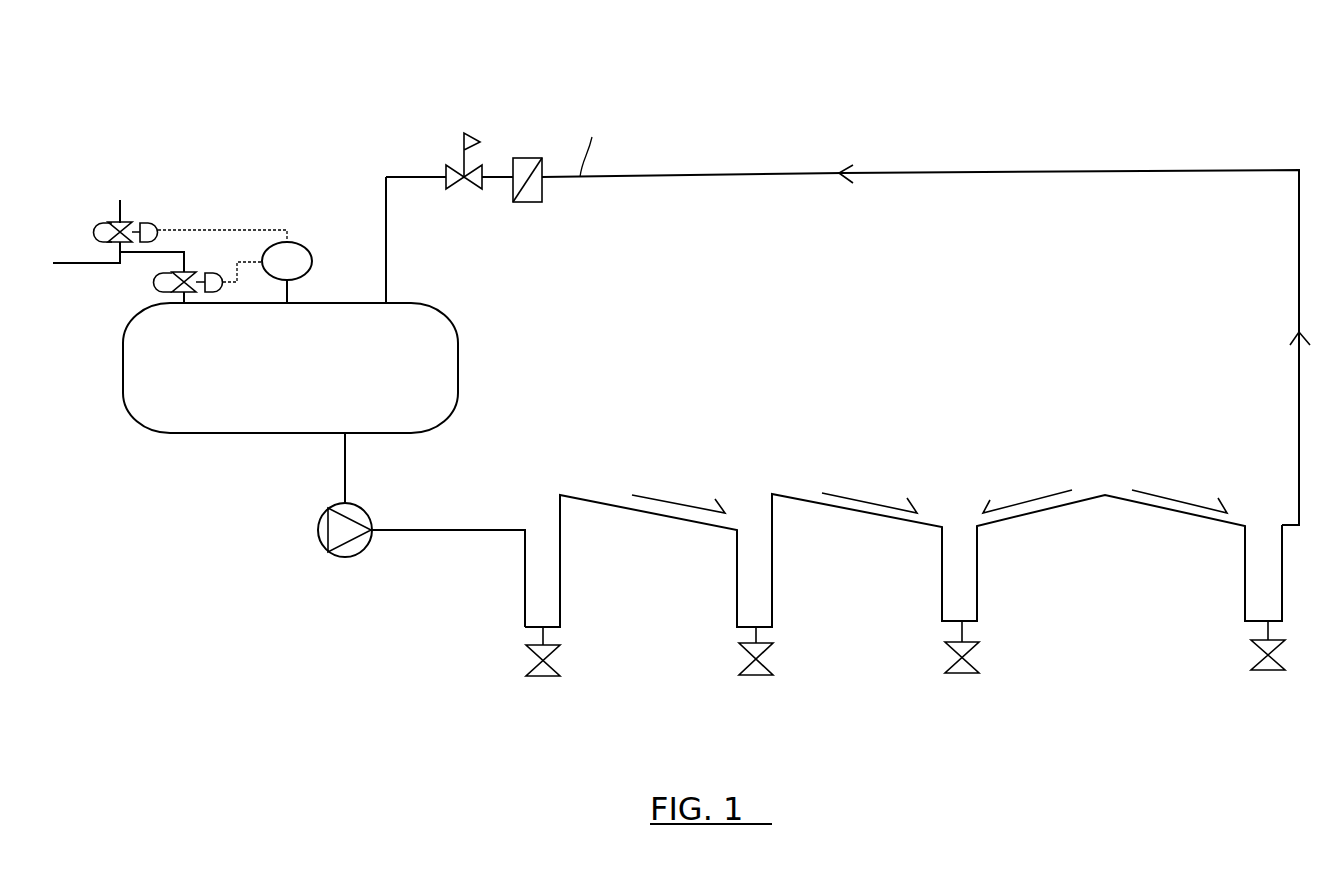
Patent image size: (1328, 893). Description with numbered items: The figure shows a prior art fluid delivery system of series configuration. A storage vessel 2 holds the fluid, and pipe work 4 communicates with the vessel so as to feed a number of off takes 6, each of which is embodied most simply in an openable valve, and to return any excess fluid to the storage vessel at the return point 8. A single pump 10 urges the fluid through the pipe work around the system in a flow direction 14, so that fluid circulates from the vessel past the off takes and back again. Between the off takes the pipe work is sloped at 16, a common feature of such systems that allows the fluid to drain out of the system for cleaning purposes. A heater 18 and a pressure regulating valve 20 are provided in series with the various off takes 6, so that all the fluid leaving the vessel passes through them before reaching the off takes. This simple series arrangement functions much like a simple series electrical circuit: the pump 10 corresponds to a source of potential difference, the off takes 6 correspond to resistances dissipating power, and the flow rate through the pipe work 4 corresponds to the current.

The storage vessel 2 is at (160, 433).
The pipe work 4 is at (1003, 172).
The off takes 6 is at (1270, 672).
The return to the storage vessel 8 is at (392, 302).
The pump 10 is at (318, 542).
The flow direction 14 is at (841, 168).
The sloped pipe work 16 is at (840, 503).
The heater 18 is at (527, 157).
The pressure regulating valve 20 is at (446, 168).